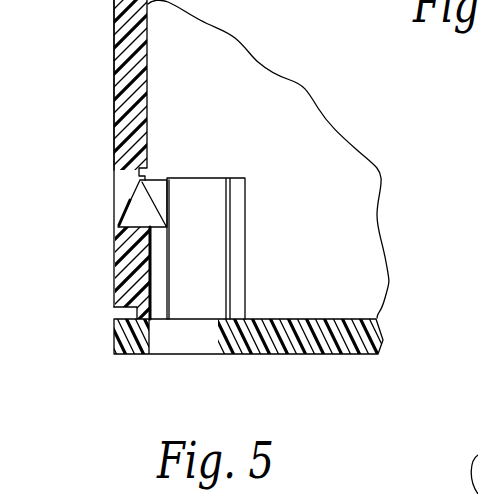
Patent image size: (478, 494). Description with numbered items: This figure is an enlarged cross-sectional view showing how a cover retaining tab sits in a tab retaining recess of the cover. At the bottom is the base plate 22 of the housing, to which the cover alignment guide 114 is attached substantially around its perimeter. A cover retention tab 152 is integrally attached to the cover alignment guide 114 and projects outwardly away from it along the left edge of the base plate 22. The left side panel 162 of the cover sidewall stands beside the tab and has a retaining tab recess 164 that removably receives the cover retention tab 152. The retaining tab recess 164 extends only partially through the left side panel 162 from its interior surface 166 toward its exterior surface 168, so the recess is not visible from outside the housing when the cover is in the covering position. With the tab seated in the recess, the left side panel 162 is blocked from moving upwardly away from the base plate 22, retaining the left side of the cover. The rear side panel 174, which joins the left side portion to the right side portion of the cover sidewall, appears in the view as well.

The base plate 22 is at (310, 340).
The cover alignment guide 114 is at (195, 262).
The cover retention tab 152 is at (140, 205).
The left side panel 162 is at (117, 43).
The retaining tab recess 164 is at (145, 181).
The interior surface 166 is at (148, 98).
The exterior surface 168 is at (116, 87).
The rear side panel 174 is at (360, 202).